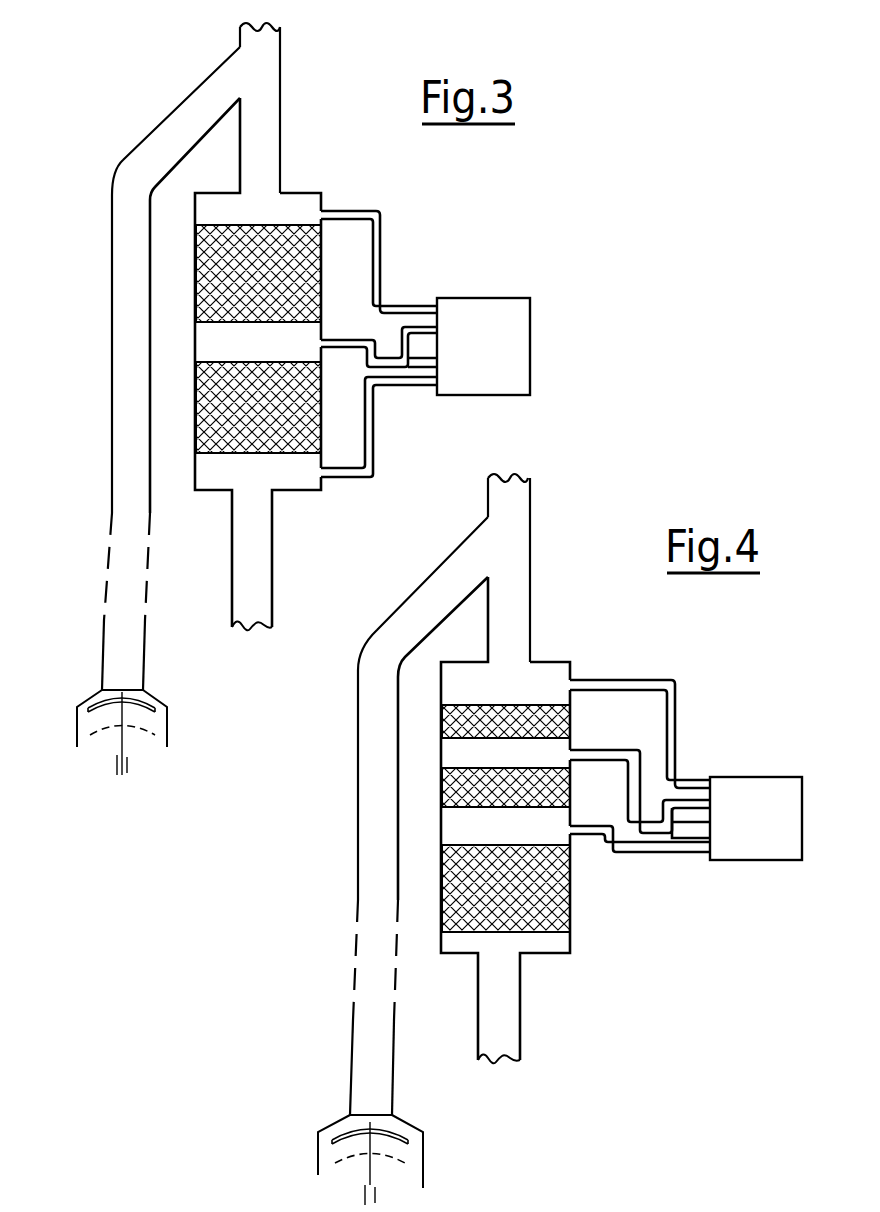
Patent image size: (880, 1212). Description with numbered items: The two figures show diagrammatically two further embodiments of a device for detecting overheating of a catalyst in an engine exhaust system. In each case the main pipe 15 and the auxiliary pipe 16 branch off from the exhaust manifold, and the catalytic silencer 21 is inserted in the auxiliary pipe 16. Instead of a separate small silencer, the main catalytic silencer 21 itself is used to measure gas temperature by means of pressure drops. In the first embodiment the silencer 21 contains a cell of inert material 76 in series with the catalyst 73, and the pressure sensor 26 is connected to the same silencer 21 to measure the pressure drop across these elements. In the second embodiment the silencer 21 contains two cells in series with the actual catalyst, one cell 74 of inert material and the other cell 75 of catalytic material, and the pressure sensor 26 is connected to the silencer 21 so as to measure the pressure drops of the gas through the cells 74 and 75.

In FIG. 3, the main pipe 15 is at (116, 328).
In FIG. 4, the main pipe 15 is at (422, 605).
In FIG. 3, the auxiliary pipe 16 is at (268, 70).
In FIG. 4, the auxiliary pipe 16 is at (518, 597).
In FIG. 3, the catalytic silencer 21 is at (301, 190).
In FIG. 4, the catalytic silencer 21 is at (561, 655).
In FIG. 3, the pressure sensor 26 is at (535, 350).
In FIG. 4, the pressure sensor 26 is at (746, 775).
In FIG. 3, the catalyst 73 is at (195, 422).
In FIG. 4, the cell of inert material 74 is at (445, 728).
In FIG. 4, the cell of catalytic material 75 is at (445, 808).
In FIG. 3, the cell of inert material 76 is at (198, 298).